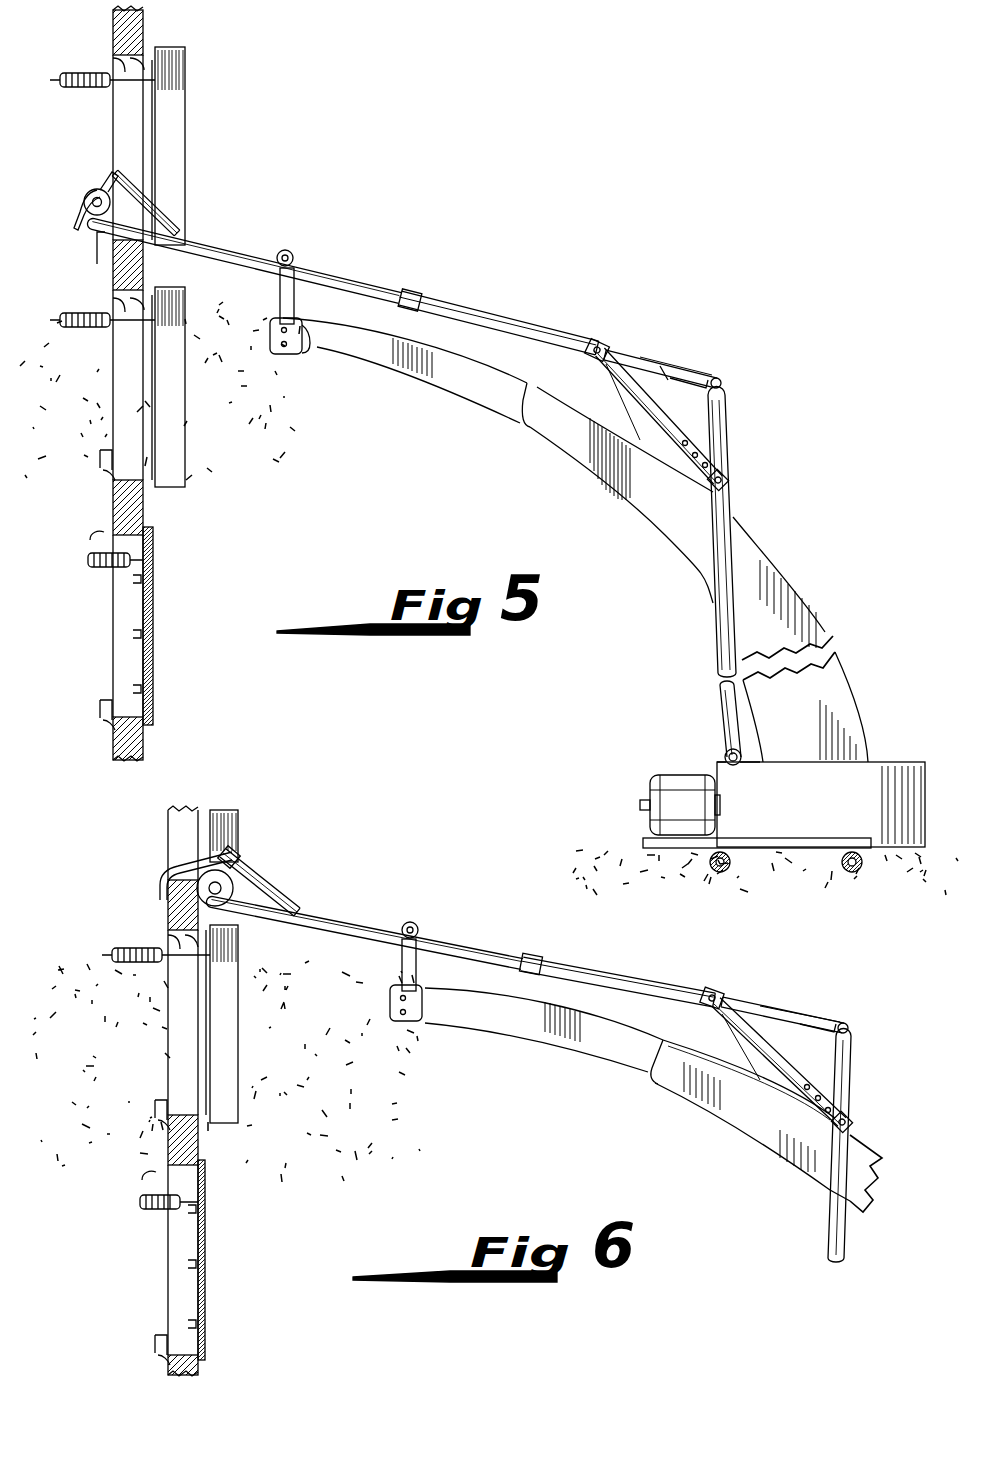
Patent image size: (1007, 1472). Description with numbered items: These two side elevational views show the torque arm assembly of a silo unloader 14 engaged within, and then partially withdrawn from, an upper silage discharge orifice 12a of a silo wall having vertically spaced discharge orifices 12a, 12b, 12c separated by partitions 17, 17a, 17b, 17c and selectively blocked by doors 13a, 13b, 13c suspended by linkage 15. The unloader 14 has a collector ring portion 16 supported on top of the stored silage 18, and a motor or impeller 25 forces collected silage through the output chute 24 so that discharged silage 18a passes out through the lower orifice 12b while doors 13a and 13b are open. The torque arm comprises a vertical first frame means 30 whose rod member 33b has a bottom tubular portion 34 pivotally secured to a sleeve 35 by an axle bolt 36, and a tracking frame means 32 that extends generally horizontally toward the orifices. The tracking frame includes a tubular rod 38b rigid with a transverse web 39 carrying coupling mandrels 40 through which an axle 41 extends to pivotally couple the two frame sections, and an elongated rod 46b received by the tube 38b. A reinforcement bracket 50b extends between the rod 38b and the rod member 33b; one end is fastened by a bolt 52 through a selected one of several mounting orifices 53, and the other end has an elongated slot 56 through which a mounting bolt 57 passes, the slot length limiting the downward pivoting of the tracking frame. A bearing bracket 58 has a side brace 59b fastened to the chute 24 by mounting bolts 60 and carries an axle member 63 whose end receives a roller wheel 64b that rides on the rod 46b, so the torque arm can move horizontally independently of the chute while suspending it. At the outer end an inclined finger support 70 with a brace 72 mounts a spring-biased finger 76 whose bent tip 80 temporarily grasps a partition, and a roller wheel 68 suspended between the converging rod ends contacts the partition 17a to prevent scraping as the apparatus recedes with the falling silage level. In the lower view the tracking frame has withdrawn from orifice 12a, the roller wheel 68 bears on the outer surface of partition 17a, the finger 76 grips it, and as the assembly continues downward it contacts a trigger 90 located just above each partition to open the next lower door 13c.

In FIG. 5, the upper silage discharge orifice 12a is at (108, 118).
In FIG. 6, the upper silage discharge orifice 12a is at (165, 820).
In FIG. 5, the lower discharge orifice 12b is at (108, 355).
In FIG. 6, the lower discharge orifice 12b is at (165, 1002).
In FIG. 5, the silage discharge orifice 12c is at (108, 618).
In FIG. 6, the silage discharge orifice 12c is at (165, 1290).
In FIG. 5, the door 13a is at (186, 58).
In FIG. 6, the door 13a is at (236, 815).
In FIG. 5, the door 13b is at (186, 302).
In FIG. 6, the door 13b is at (238, 952).
In FIG. 5, the lower door 13c is at (155, 568).
In FIG. 6, the lower door 13c is at (206, 1279).
In FIG. 5, the silo unloader 14 is at (908, 716).
In FIG. 5, the linkage 15 is at (90, 300).
In FIG. 6, the linkage 15 is at (128, 950).
In FIG. 5, the collector ring portion 16 is at (902, 762).
In FIG. 5, the silo orifice partitions 17 is at (145, 22).
In FIG. 5, the partition 17a is at (145, 274).
In FIG. 6, the partition 17a is at (168, 912).
In FIG. 5, the partition 17b is at (147, 512).
In FIG. 6, the partition 17b is at (200, 1148).
In FIG. 5, the fence post section 17c is at (145, 742).
In FIG. 6, the fence post section 17c is at (183, 1365).
In FIG. 5, the stored silage 18 is at (620, 850).
In FIG. 5, the discharged silage 18a is at (220, 380).
In FIG. 6, the discharged silage 18a is at (90, 1062).
In FIG. 5, the output chute 24 is at (482, 400).
In FIG. 6, the output chute 24 is at (570, 1043).
In FIG. 5, the motor or impeller 25 is at (638, 782).
In FIG. 5, the first frame means 30 is at (792, 362).
In FIG. 6, the first frame means 30 is at (856, 1093).
In FIG. 6, the tracking frame means 32 is at (482, 945).
In FIG. 5, the rod member 33b is at (729, 425).
In FIG. 6, the rod member 33b is at (852, 1052).
In FIG. 5, the tubular portion 34 is at (740, 766).
In FIG. 5, the sleeve 35 is at (722, 742).
In FIG. 5, the axle bolt 36 is at (722, 758).
In FIG. 5, the tubular rod 38b is at (458, 312).
In FIG. 6, the tubular rod 38b is at (575, 968).
In FIG. 5, the transverse web 39 is at (700, 362).
In FIG. 6, the transverse web 39 is at (807, 1014).
In FIG. 5, the coupling mandrel 40 is at (723, 384).
In FIG. 6, the coupling mandrel 40 is at (849, 1026).
In FIG. 5, the axle 41 is at (726, 379).
In FIG. 6, the axle 41 is at (851, 1031).
In FIG. 5, the elongated rod 46b is at (342, 278).
In FIG. 6, the elongated rod 46b is at (338, 926).
In FIG. 5, the reinforcement bracket 50b is at (604, 372).
In FIG. 6, the reinforcement bracket 50b is at (725, 1042).
In FIG. 5, the bolt 52 is at (728, 488).
In FIG. 6, the bolt 52 is at (852, 1122).
In FIG. 5, the mounting orifices 53 is at (704, 453).
In FIG. 6, the mounting orifices 53 is at (802, 1095).
In FIG. 5, the elongated aperture slot 56 is at (622, 366).
In FIG. 6, the elongated aperture slot 56 is at (722, 999).
In FIG. 5, the mounting bolt 57 is at (602, 345).
In FIG. 6, the mounting bolt 57 is at (724, 1004).
In FIG. 5, the bearing bracket 58 is at (275, 251).
In FIG. 6, the bearing bracket 58 is at (426, 922).
In FIG. 5, the side brace 59b is at (295, 305).
In FIG. 6, the side brace 59b is at (402, 970).
In FIG. 5, the mounting bolts 60 is at (290, 360).
In FIG. 6, the mounting bolts 60 is at (420, 1005).
In FIG. 5, the axle member 63 is at (293, 259).
In FIG. 6, the axle member 63 is at (418, 931).
In FIG. 5, the roller wheel 64b is at (292, 254).
In FIG. 6, the roller wheel 64b is at (406, 924).
In FIG. 5, the roller wheel means 68 is at (90, 195).
In FIG. 5, the finger support 70 is at (160, 200).
In FIG. 6, the finger support 70 is at (252, 878).
In FIG. 6, the brace 72 is at (262, 893).
In FIG. 6, the finger 76 is at (165, 862).
In FIG. 5, the bent tip 80 is at (73, 228).
In FIG. 5, the trigger means 90 is at (108, 452).
In FIG. 6, the trigger means 90 is at (167, 1335).